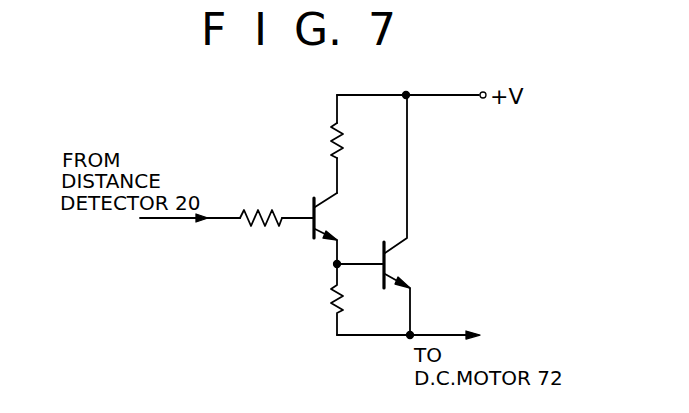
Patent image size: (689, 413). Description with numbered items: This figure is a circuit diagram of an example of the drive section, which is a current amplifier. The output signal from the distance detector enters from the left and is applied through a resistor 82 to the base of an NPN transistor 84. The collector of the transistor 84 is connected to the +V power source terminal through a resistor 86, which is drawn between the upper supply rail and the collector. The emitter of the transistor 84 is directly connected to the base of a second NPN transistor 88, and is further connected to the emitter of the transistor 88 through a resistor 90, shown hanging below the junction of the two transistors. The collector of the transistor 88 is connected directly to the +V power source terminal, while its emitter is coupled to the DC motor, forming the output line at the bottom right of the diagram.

The resistor 82 is at (267, 210).
The NPN transistor 84 is at (333, 216).
The resistor 86 is at (351, 139).
The NPN transistor 88 is at (401, 265).
The resistor 90 is at (330, 299).